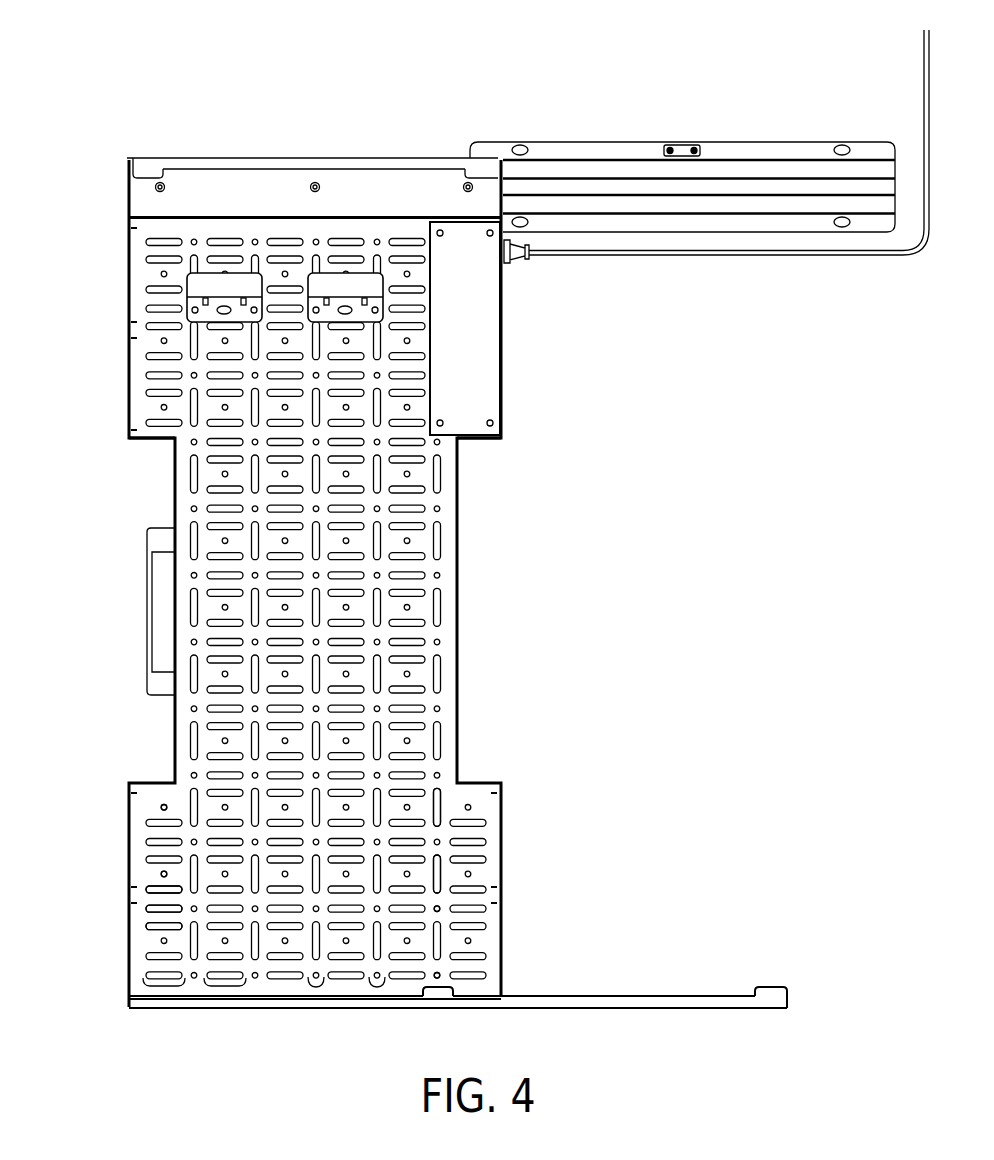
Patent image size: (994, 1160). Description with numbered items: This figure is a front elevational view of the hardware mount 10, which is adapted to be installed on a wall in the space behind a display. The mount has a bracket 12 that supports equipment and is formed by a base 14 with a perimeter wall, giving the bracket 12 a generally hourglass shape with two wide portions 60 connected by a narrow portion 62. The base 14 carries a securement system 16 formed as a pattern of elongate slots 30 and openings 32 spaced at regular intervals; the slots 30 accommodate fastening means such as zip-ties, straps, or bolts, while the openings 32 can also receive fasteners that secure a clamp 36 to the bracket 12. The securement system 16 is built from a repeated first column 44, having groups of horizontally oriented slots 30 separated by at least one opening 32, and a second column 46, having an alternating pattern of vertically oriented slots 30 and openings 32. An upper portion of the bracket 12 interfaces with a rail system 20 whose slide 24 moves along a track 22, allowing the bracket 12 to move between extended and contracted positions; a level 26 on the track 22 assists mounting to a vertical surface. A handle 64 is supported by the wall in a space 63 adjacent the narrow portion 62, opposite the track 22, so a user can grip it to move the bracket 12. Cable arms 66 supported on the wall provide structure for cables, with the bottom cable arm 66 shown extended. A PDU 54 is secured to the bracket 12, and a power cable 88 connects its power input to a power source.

The hardware mount 10 is at (632, 688).
The bracket 12 is at (118, 214).
The base 14 is at (138, 366).
The securement system 16 is at (176, 458).
The rail system 20 is at (682, 143).
The track 22 is at (783, 148).
The slide 24 is at (504, 187).
The level 26 is at (683, 146).
The slots 30 is at (152, 926).
The openings 32 is at (160, 873).
The clamp 36 is at (346, 260).
The first column 44 is at (164, 989).
The second column 46 is at (315, 988).
The PDU 54 is at (455, 240).
The wide portions 60 is at (70, 160).
The narrow portion 62 is at (125, 442).
The spaces 63 is at (156, 742).
The handle 64 is at (163, 533).
The cable arms 66 is at (152, 168).
The power cable 88 is at (924, 52).